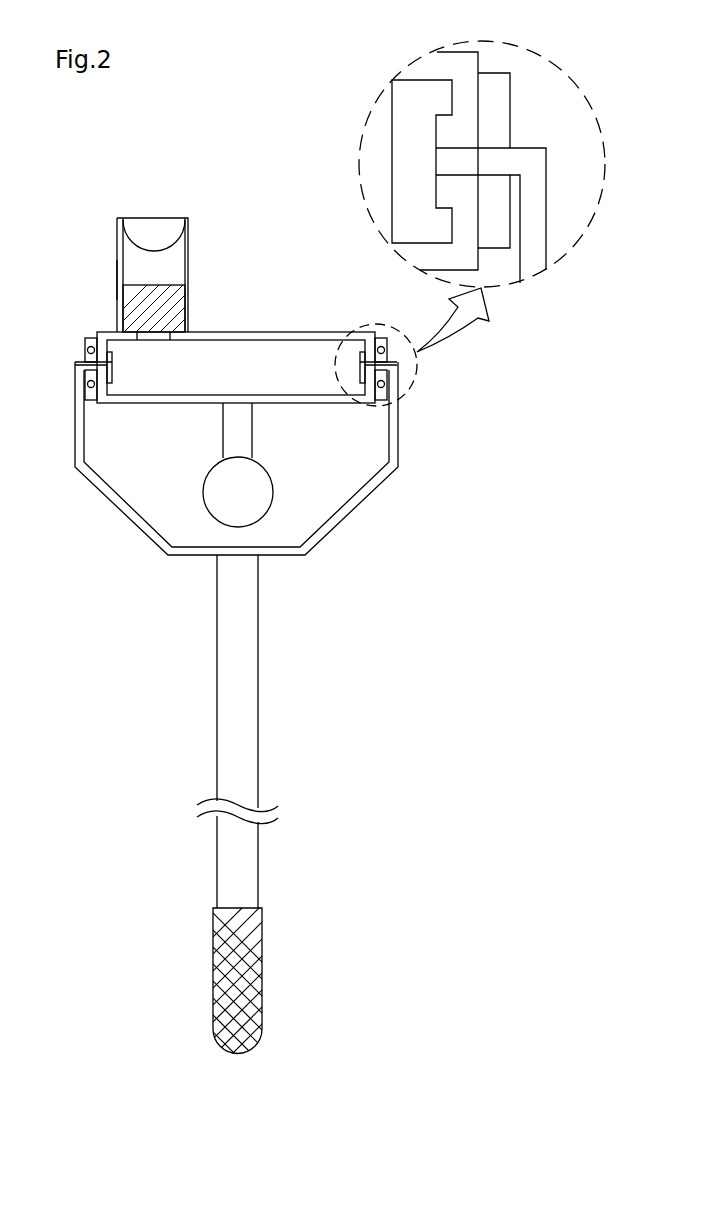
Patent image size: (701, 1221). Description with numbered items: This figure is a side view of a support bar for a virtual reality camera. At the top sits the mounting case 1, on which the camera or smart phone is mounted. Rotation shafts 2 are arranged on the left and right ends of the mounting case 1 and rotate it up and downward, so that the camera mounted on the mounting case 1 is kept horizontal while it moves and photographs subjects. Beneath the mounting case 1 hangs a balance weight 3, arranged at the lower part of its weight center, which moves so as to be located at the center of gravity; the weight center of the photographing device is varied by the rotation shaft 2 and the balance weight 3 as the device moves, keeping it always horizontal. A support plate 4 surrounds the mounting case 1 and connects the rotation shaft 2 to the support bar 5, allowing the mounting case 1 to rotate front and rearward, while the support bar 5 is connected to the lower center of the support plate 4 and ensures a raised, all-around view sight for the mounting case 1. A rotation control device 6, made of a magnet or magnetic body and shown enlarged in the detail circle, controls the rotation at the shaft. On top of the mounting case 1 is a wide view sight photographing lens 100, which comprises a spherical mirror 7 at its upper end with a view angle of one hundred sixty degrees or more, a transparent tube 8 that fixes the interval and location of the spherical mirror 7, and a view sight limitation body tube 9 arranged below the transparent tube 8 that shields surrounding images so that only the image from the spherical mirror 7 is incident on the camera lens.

The mounting case 1 is at (303, 403).
The rotation shaft 2 is at (90, 363).
The balance weight 3 is at (265, 492).
The support plate 4 is at (125, 507).
The support bar 5 is at (250, 753).
The rotation control device 6 is at (380, 334).
The spherical mirror 7 is at (120, 249).
The transparent tube 8 is at (118, 276).
The view sight limitation body tube 9 is at (185, 300).
The wide view sight photographing lens 100 is at (173, 275).